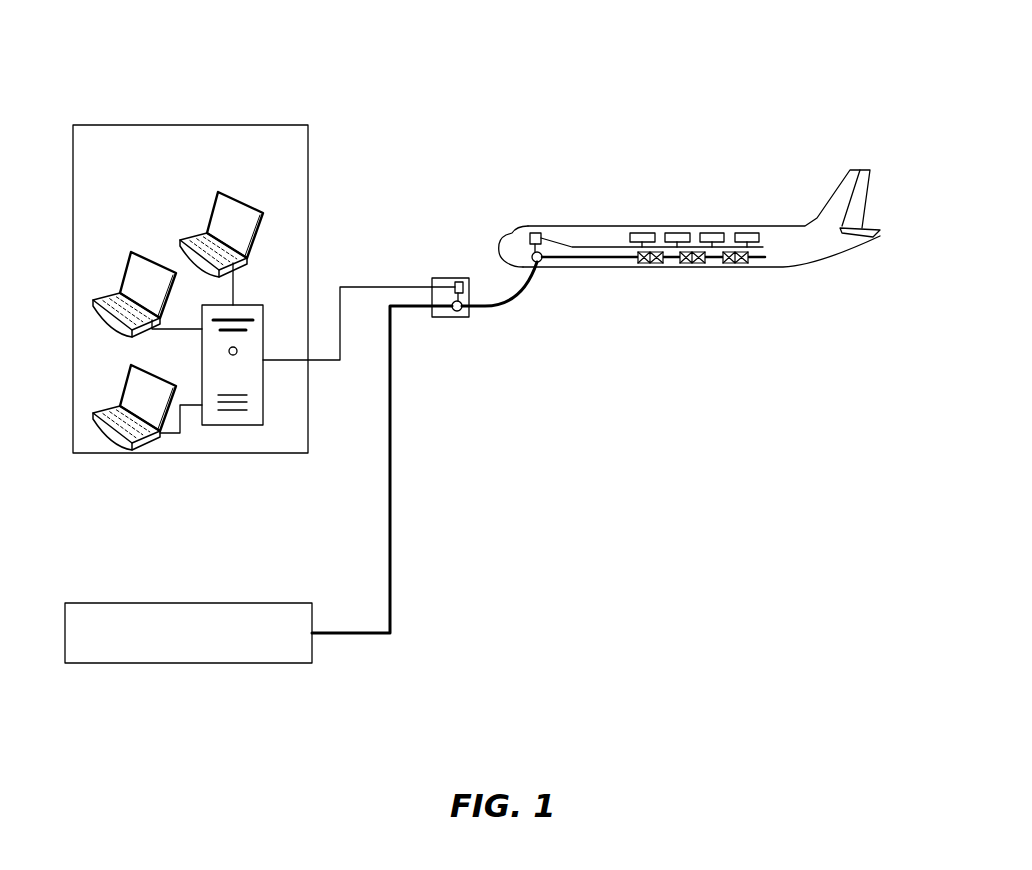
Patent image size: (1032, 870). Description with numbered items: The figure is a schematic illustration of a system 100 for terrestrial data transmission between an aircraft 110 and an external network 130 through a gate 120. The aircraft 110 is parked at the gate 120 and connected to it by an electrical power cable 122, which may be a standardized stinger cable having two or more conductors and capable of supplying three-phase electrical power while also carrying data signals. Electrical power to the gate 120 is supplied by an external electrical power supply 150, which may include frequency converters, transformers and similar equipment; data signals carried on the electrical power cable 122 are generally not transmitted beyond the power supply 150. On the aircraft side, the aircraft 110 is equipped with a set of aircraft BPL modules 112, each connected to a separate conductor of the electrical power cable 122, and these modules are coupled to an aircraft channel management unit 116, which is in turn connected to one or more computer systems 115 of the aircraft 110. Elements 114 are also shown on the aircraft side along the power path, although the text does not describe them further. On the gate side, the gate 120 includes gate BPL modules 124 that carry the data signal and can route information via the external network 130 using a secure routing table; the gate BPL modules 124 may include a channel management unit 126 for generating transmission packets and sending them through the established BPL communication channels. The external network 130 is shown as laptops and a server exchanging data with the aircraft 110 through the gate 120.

The system 100 is at (838, 78).
The aircraft 110 is at (833, 250).
The aircraft BPL modules 112 is at (539, 263).
The aircraft electrical loads 114 is at (655, 264).
The computer systems 115 is at (652, 232).
The aircraft channel management unit 116 is at (535, 228).
The gate 120 is at (465, 318).
The electrical power cable 122 is at (500, 296).
The gate BPL modules 124 is at (455, 312).
The channel management unit 126 is at (457, 281).
The external network 130 is at (252, 289).
The external electrical power supply 150 is at (258, 484).